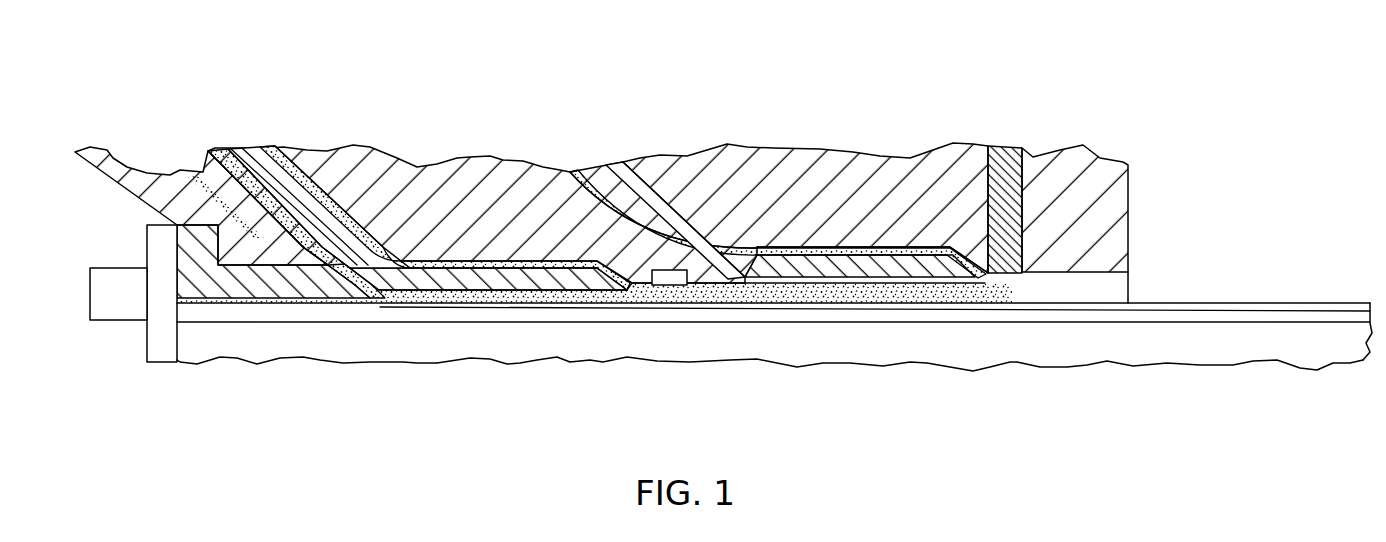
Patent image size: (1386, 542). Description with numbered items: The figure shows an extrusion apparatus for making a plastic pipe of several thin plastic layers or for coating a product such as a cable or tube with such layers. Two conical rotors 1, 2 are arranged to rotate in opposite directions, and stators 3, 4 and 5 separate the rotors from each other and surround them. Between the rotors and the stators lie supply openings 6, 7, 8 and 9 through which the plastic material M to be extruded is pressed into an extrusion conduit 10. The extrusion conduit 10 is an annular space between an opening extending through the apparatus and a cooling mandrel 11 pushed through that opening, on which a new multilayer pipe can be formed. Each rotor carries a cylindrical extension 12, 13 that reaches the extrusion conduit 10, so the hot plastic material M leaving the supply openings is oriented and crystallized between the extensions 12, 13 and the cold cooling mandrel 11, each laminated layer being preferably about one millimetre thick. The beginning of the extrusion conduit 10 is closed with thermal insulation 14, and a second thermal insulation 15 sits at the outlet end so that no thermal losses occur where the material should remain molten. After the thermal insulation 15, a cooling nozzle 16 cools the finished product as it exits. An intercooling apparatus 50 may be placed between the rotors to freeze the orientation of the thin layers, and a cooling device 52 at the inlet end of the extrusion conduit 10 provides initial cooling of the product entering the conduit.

The conical rotor 1 is at (298, 218).
The conical rotor 2 is at (688, 195).
The stator 3 is at (503, 200).
The stator 4 is at (152, 192).
The stator 5 is at (823, 195).
The supply opening 6 is at (212, 200).
The supply opening 7 is at (582, 212).
The supply opening 8 is at (378, 238).
The supply opening 9 is at (743, 240).
The extrusion conduit 10 is at (907, 293).
The cooling mandrel 11 is at (267, 342).
The cylindrical extension 12 is at (485, 260).
The cylindrical extension 13 is at (863, 270).
The thermal insulation 14 is at (300, 283).
The thermal insulation 15 is at (1007, 190).
The cooling nozzle 16 is at (1107, 213).
The intercooling apparatus 50 is at (665, 270).
The cooling device 52 is at (117, 305).
The plastic material M is at (225, 158).